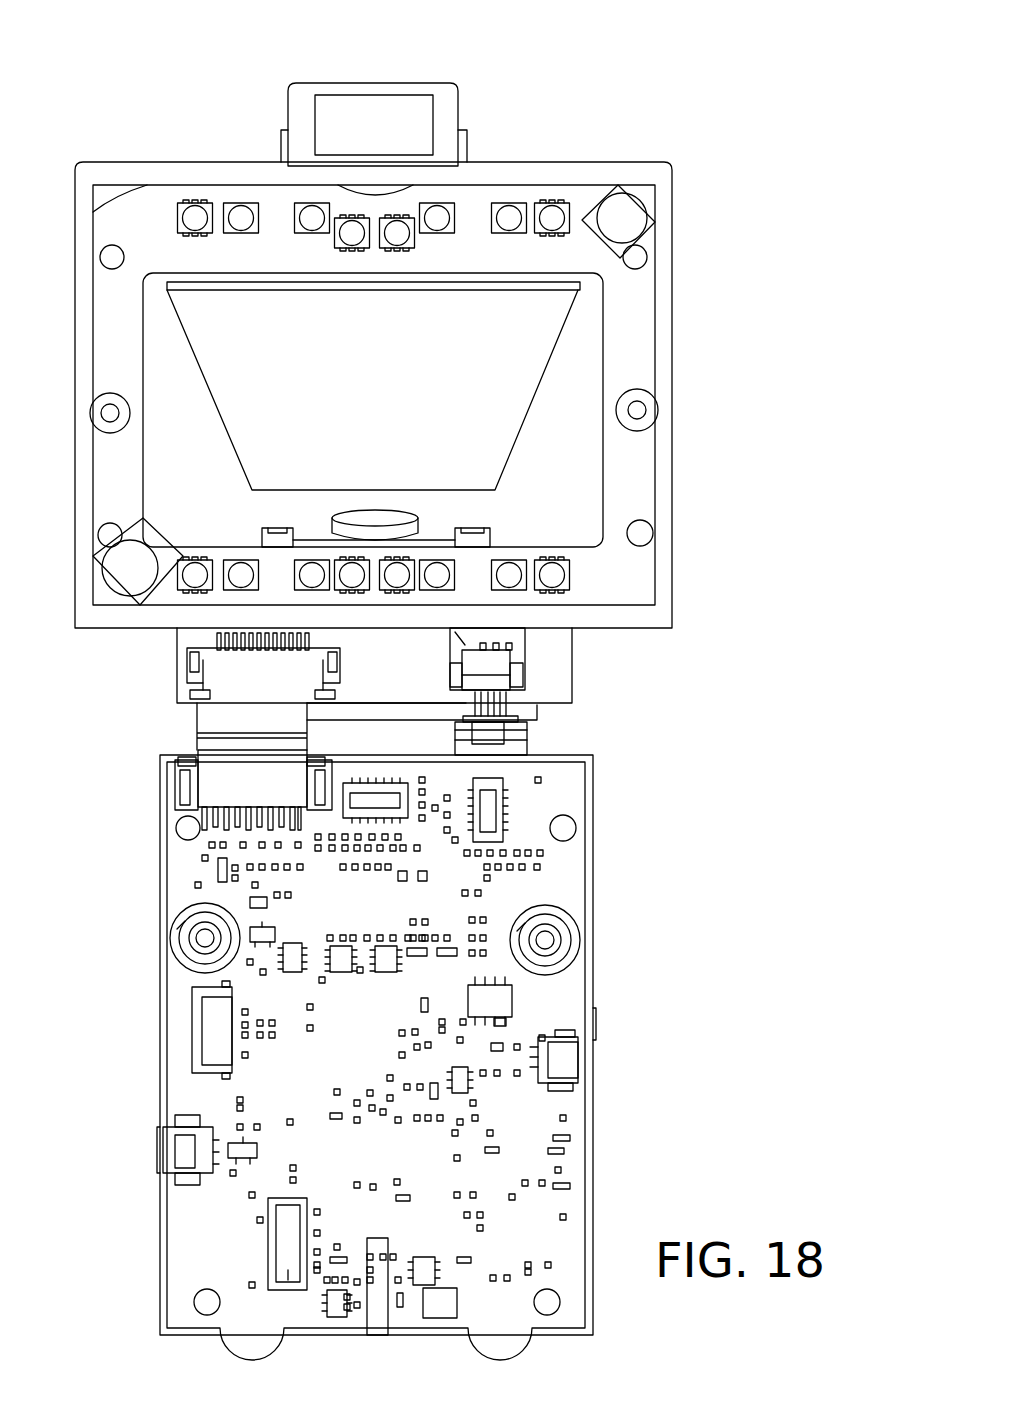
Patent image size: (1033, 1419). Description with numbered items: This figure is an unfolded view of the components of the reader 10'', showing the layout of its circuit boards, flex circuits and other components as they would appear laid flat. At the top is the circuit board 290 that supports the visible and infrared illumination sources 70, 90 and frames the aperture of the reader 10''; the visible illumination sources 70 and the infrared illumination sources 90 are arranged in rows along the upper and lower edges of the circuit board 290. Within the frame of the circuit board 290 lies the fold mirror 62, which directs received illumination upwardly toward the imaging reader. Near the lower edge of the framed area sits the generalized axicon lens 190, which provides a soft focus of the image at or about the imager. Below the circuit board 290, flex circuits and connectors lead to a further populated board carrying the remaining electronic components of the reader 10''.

The reader 10'' is at (440, 680).
The fold mirror 62 is at (392, 397).
The visible illumination sources 70 is at (298, 212).
The infrared illumination sources 90 is at (400, 218).
The generalized axicon lens 190 is at (405, 517).
The circuit board 290 is at (658, 352).